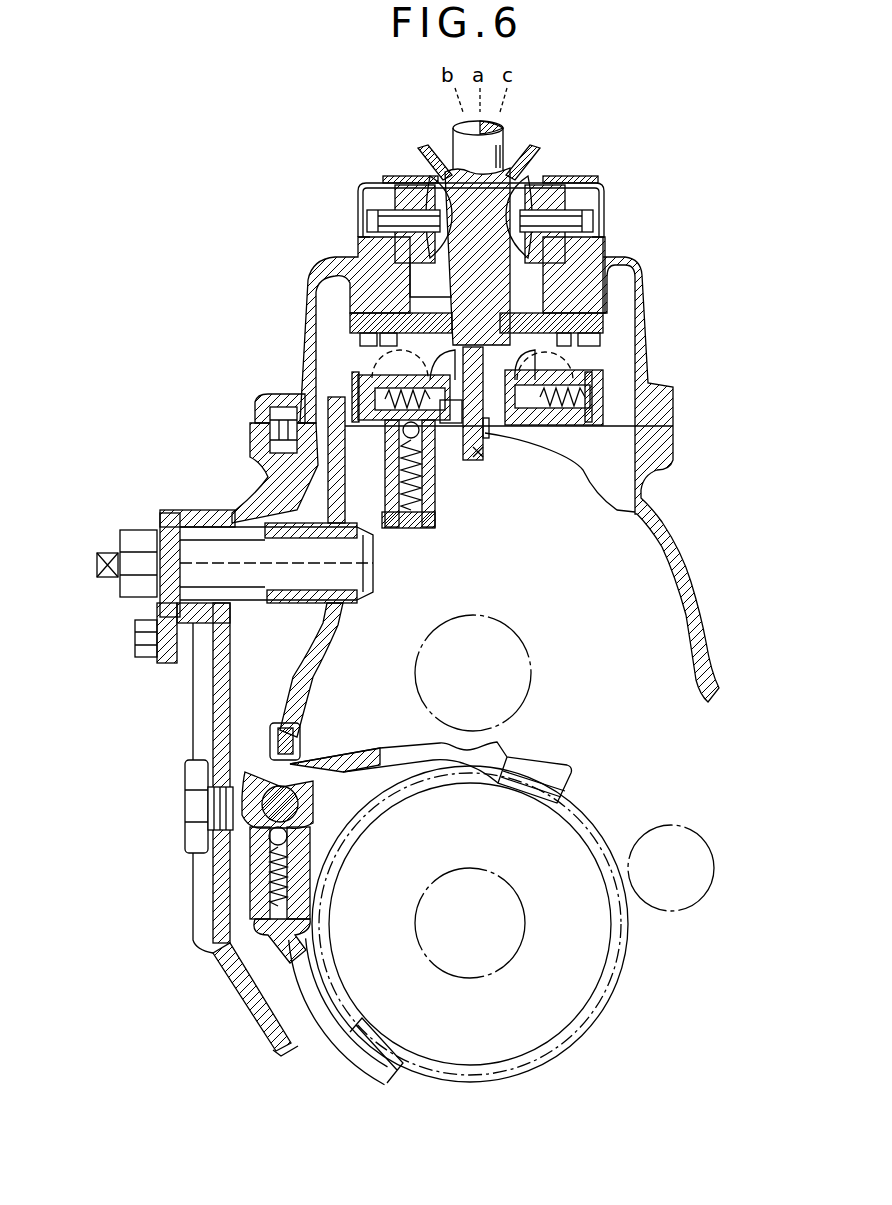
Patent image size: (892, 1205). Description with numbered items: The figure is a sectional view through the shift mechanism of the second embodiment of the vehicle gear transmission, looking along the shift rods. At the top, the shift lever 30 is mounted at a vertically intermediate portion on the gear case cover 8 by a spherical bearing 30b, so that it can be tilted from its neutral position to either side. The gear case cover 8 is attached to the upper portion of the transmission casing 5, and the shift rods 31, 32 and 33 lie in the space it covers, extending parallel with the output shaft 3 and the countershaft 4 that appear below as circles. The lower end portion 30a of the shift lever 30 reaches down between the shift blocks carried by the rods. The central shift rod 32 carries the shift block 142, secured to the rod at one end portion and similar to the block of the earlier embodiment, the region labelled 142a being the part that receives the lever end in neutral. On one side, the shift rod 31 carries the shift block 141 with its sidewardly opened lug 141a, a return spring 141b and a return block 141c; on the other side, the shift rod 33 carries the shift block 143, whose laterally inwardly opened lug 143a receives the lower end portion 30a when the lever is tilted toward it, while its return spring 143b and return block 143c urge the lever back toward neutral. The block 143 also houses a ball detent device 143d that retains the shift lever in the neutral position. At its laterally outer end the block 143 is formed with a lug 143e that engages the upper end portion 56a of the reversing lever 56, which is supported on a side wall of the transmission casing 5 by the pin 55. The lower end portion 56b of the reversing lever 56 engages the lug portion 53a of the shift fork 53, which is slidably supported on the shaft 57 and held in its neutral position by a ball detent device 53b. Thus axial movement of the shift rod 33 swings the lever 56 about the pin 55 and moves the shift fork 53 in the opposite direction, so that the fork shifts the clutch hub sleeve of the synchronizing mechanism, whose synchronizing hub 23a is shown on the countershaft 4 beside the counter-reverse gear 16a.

The output shaft 3 is at (520, 653).
The countershaft 4 is at (510, 933).
The transmission casing 5 is at (213, 717).
The gear case cover 8 is at (340, 265).
The counter-reverse gear 16a is at (697, 840).
The synchronizing hub 23a is at (605, 993).
The shift lever 30 is at (503, 143).
The downwardly extending pawl 30a is at (503, 357).
The spherical bearing 30b is at (423, 180).
The shift rod 31 is at (578, 363).
The central shift rod 32 is at (458, 340).
The shift rod 33 is at (363, 357).
The shift fork 53 is at (398, 757).
The lug portion 53a is at (300, 740).
The ball detent device 53b is at (300, 873).
The pin 55 is at (347, 570).
The reversing lever 56 is at (326, 666).
The upper end portion 56a is at (313, 413).
The lower end portion 56b is at (294, 727).
The shaft 57 is at (310, 806).
The shift block 141 is at (612, 400).
The sidewardly opened lug 141a is at (540, 447).
The return spring 141b is at (588, 422).
The return block 141c is at (508, 380).
The shift block 142 is at (480, 462).
The pivot shaft portion 142a is at (489, 438).
The shift block 143 is at (368, 446).
The laterally inwardly opened lug 143a is at (452, 378).
The return spring 143b is at (372, 388).
The return block 143c is at (443, 440).
The ball detent device 143d is at (428, 496).
The lug 143e is at (340, 393).